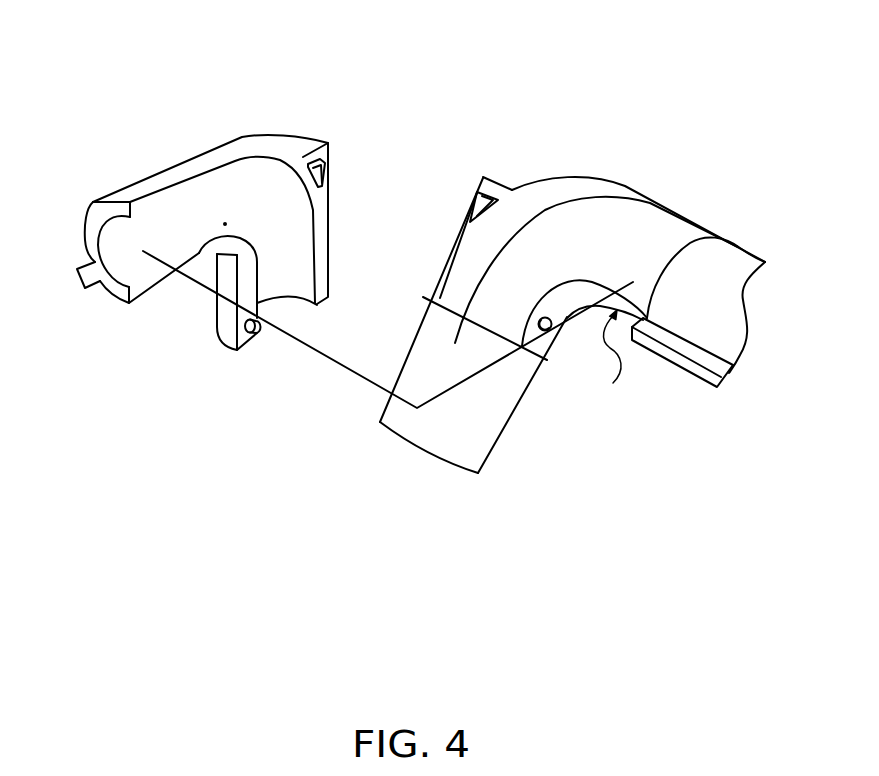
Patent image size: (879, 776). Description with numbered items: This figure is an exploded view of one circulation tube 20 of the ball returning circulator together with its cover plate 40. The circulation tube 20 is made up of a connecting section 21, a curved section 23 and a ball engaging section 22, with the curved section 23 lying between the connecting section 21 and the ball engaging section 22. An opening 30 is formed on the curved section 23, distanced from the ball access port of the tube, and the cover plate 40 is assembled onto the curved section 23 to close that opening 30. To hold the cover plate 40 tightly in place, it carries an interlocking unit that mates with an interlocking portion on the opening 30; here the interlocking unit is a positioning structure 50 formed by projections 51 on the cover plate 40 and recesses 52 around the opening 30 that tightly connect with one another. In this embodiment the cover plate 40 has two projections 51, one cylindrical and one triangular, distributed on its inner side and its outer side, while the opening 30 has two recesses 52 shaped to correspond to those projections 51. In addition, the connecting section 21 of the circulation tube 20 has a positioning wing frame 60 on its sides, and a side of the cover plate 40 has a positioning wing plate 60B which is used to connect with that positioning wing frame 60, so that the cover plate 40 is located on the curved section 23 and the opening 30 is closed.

The circulation tube 20 is at (725, 94).
The connecting section 21 is at (737, 243).
The ball engaging section 22 is at (617, 213).
The curved section 23 is at (573, 176).
The opening 30 is at (610, 359).
The cover plate 40 is at (183, 156).
The positioning structure 50 is at (458, 77).
The projection 51 is at (323, 172).
The recess 52 is at (478, 204).
The positioning wing frame 60 is at (718, 368).
The positioning wing plate 60B is at (83, 285).